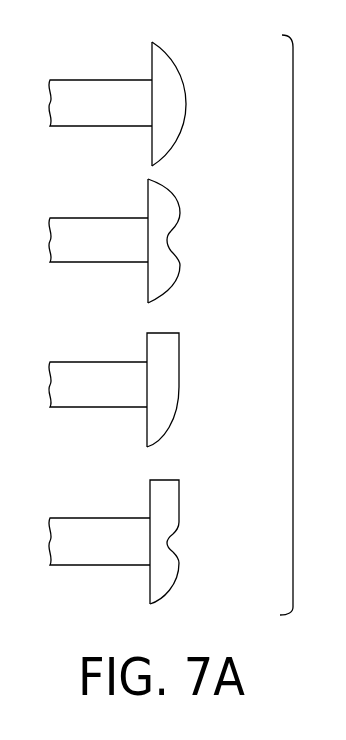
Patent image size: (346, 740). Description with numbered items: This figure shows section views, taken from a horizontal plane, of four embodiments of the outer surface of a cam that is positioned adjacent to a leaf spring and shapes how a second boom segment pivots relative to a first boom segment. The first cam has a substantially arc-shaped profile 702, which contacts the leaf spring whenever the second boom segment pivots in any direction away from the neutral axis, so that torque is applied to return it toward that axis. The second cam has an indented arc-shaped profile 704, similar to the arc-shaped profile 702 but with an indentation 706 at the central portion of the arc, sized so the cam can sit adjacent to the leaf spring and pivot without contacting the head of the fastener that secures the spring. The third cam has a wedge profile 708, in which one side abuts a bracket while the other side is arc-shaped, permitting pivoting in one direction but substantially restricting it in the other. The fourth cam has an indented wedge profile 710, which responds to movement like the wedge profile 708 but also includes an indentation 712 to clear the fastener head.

The arc-shaped profile 702 is at (170, 69).
The indented arc-shaped profile 704 is at (167, 203).
The indentation 706 is at (175, 242).
The wedge profile 708 is at (171, 350).
The indented wedge profile 710 is at (175, 497).
The indentation 712 is at (178, 542).